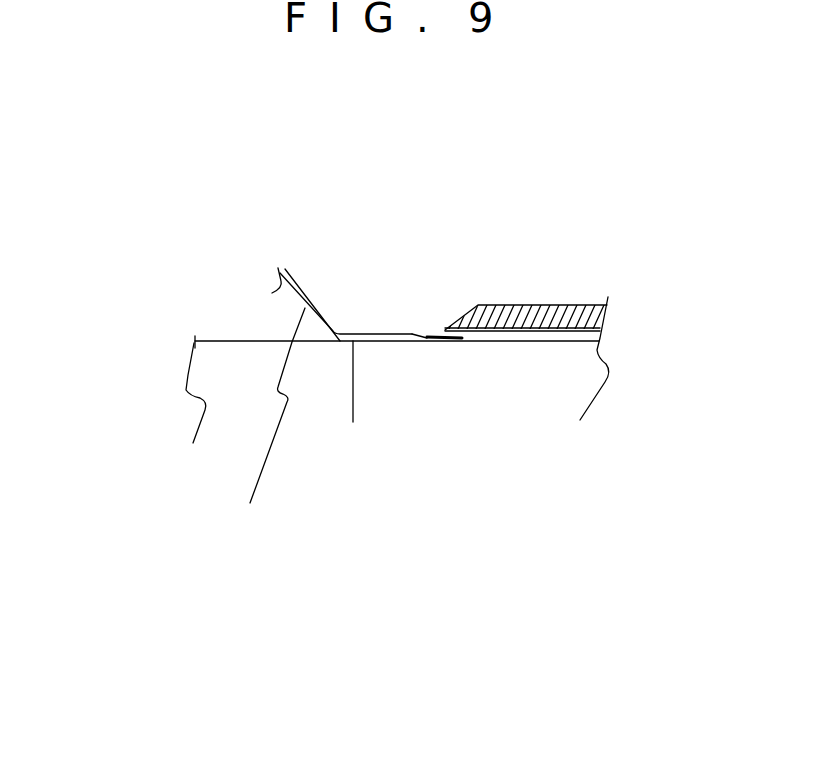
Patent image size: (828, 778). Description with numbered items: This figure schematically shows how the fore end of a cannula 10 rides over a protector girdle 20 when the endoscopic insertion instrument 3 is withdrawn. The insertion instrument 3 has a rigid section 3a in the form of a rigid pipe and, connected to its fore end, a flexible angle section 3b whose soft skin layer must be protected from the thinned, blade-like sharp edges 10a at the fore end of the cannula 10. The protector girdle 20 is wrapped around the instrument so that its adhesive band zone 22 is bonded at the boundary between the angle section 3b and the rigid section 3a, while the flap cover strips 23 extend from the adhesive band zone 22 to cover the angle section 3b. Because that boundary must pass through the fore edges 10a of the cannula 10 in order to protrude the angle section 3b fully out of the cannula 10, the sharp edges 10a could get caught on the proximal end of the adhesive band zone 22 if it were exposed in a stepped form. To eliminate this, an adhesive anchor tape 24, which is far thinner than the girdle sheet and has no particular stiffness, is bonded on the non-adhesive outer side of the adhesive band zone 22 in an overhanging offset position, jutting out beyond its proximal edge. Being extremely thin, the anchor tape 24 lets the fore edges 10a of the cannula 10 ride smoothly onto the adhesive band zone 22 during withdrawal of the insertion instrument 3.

The endoscopic insertion instrument 3 is at (233, 327).
The rigid section 3a is at (558, 368).
The flexible angle section 3b is at (227, 370).
The cannula 10 is at (572, 307).
The sharp edges 10a is at (457, 330).
The protector girdle 20 is at (302, 275).
The adhesive band zone 22 is at (402, 341).
The flap cover strips 23 is at (269, 421).
The adhesive anchor tape 24 is at (421, 333).